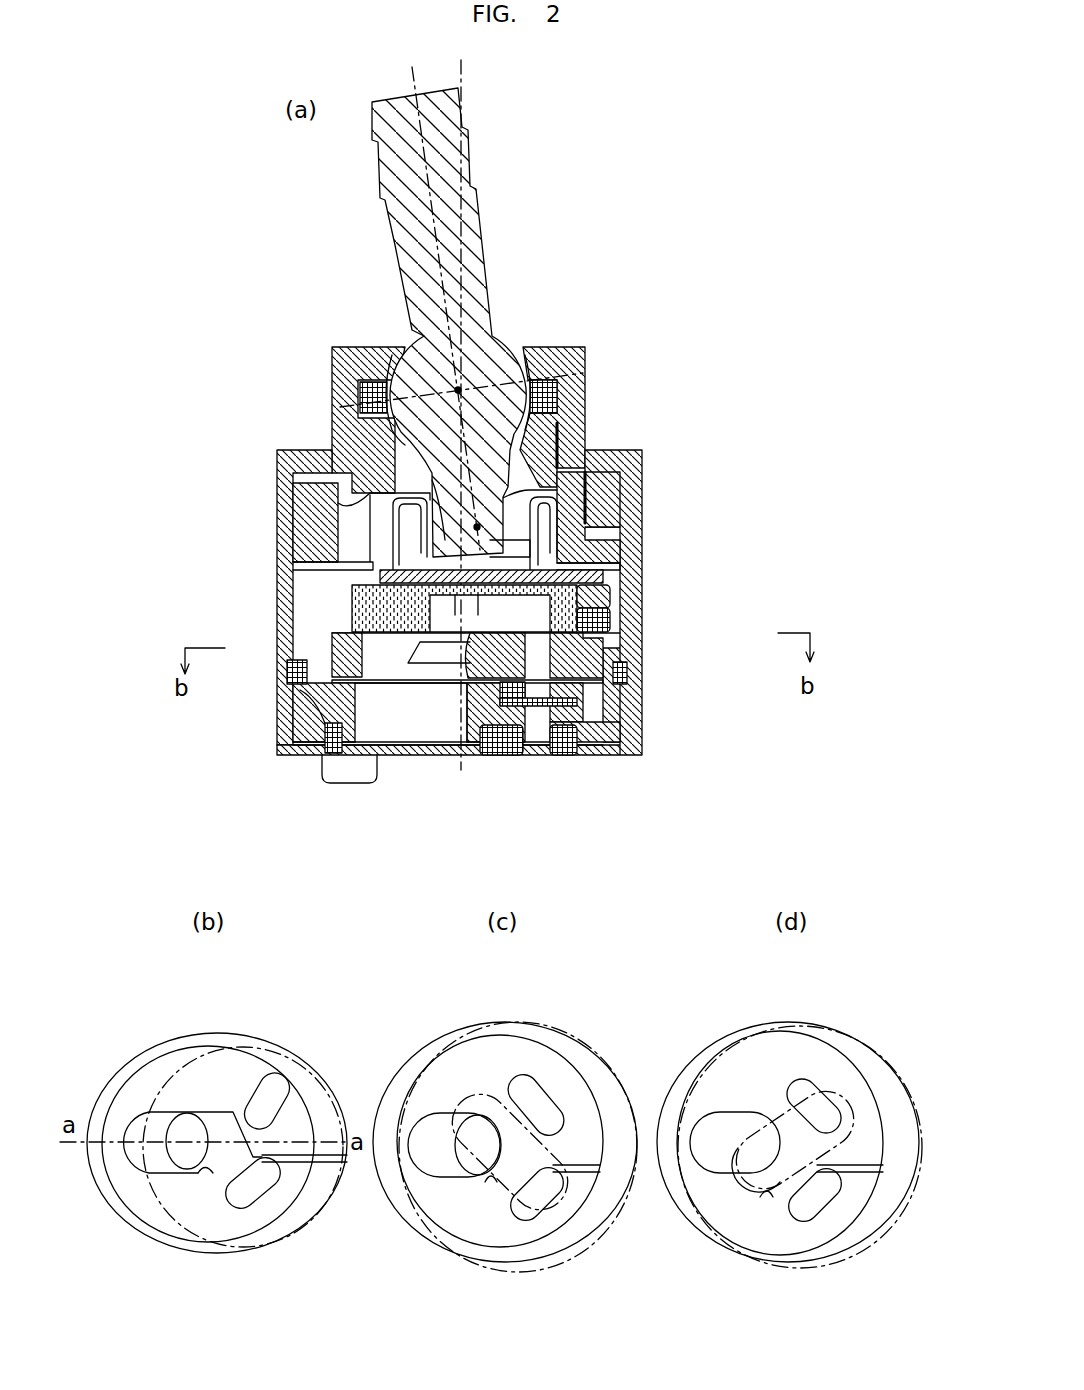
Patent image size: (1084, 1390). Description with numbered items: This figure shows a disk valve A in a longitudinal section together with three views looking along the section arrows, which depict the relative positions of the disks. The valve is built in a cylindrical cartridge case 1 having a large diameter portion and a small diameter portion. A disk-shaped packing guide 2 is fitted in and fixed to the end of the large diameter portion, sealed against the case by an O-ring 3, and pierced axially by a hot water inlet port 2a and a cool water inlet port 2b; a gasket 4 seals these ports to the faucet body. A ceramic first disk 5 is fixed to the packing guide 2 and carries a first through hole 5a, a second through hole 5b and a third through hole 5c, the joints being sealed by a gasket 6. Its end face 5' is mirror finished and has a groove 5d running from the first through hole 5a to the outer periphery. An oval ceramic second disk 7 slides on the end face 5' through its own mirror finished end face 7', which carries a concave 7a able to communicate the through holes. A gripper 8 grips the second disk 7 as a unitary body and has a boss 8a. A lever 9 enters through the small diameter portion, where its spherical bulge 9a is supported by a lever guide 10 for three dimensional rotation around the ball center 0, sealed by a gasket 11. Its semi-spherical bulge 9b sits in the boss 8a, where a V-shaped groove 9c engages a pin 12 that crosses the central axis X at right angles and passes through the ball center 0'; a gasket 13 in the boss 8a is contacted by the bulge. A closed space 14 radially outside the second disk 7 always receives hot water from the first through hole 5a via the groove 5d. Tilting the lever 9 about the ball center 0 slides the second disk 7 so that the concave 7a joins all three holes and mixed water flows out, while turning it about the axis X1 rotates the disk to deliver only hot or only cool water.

The cartridge case 1 is at (642, 548).
The packing guide 2 is at (603, 730).
The hot water inlet port 2a is at (577, 776).
The cool water inlet port 2b is at (538, 718).
The O-ring 3 is at (525, 693).
The gasket 4 is at (335, 755).
The first disk 5 is at (503, 979).
The end face 5' is at (492, 941).
The first through hole 5a is at (560, 700).
The second through hole 5b is at (262, 1092).
The third through hole 5c is at (330, 715).
The groove 5d is at (610, 626).
The gasket 6 is at (297, 684).
The second disk 7 is at (532, 946).
The end face 7' is at (693, 654).
The concave 7a is at (345, 640).
The gripper 8 is at (603, 578).
The boss 8a is at (560, 530).
The lever 9 is at (468, 235).
The spherical bulge 9a is at (525, 340).
The semi-spherical bulge 9b is at (403, 510).
The V-shaped groove 9c is at (445, 548).
The lever guide 10 is at (560, 435).
The gasket 11 is at (585, 360).
The pin 12 is at (360, 490).
The gasket 13 is at (590, 500).
The closed space 14 is at (590, 602).
The disk valve A is at (638, 378).
The ball center 0 is at (485, 329).
The ball center 0' is at (603, 478).
The central axis X is at (470, 470).
The axis X1 is at (461, 80).